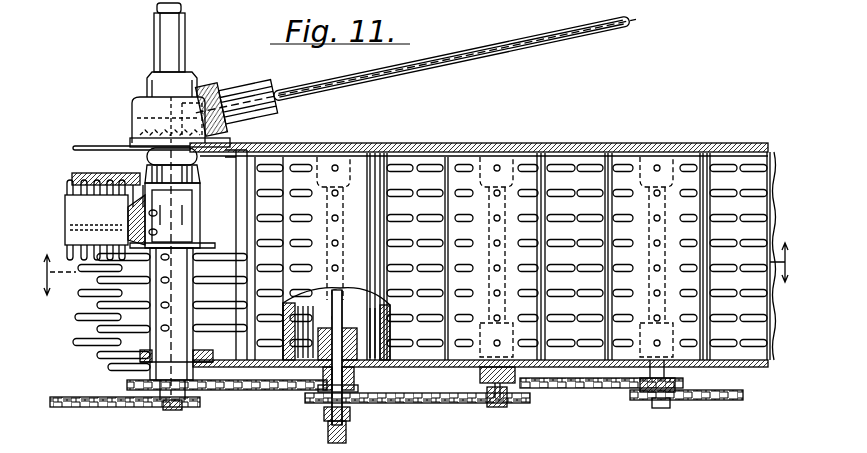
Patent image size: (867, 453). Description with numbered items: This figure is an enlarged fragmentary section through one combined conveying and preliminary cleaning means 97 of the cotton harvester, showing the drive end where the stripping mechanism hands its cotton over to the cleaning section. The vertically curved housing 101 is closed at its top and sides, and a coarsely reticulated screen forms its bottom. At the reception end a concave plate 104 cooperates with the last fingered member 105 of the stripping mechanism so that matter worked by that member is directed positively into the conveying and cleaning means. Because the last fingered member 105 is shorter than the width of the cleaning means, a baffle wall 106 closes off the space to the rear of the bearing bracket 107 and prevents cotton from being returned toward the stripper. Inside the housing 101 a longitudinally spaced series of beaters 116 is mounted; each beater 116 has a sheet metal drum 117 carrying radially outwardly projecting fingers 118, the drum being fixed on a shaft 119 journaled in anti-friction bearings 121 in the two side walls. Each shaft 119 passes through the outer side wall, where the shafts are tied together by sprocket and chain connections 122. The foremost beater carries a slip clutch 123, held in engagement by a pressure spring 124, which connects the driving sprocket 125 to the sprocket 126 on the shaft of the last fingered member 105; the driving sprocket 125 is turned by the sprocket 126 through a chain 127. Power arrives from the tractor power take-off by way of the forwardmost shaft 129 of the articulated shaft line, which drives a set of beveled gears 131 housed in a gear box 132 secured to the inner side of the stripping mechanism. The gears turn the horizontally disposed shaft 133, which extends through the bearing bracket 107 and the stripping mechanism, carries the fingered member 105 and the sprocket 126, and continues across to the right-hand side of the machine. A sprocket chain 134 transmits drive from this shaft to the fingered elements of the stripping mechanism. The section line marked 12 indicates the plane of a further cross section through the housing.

The section line 12- 12 is at (415, 269).
The combined conveying and preliminary cleaning means 97 is at (487, 113).
The housing 101 is at (603, 134).
The concave plate 104 is at (228, 356).
The last fingered member 105 is at (147, 335).
The baffle wall 106 is at (246, 198).
The bearing bracket 107 is at (192, 218).
The beaters 116 is at (377, 144).
The sheet metal drum 117 is at (390, 331).
The fingers 118 is at (336, 266).
The shaft 119 is at (348, 293).
The anti-friction bearings 121 is at (350, 331).
The sprocket and chain connections 122 is at (528, 399).
The slip clutch 123 is at (318, 400).
The pressure spring 124 is at (352, 413).
The driving sprocket 125 is at (355, 372).
The sprocket 126 is at (174, 408).
The chain 127 is at (278, 393).
The forwardmost shaft 129 is at (370, 86).
The beveled gears 131 is at (134, 112).
The gear box 132 is at (135, 96).
The horizontally disposed shaft 133 is at (160, 9).
The sprocket chain 134 is at (116, 416).